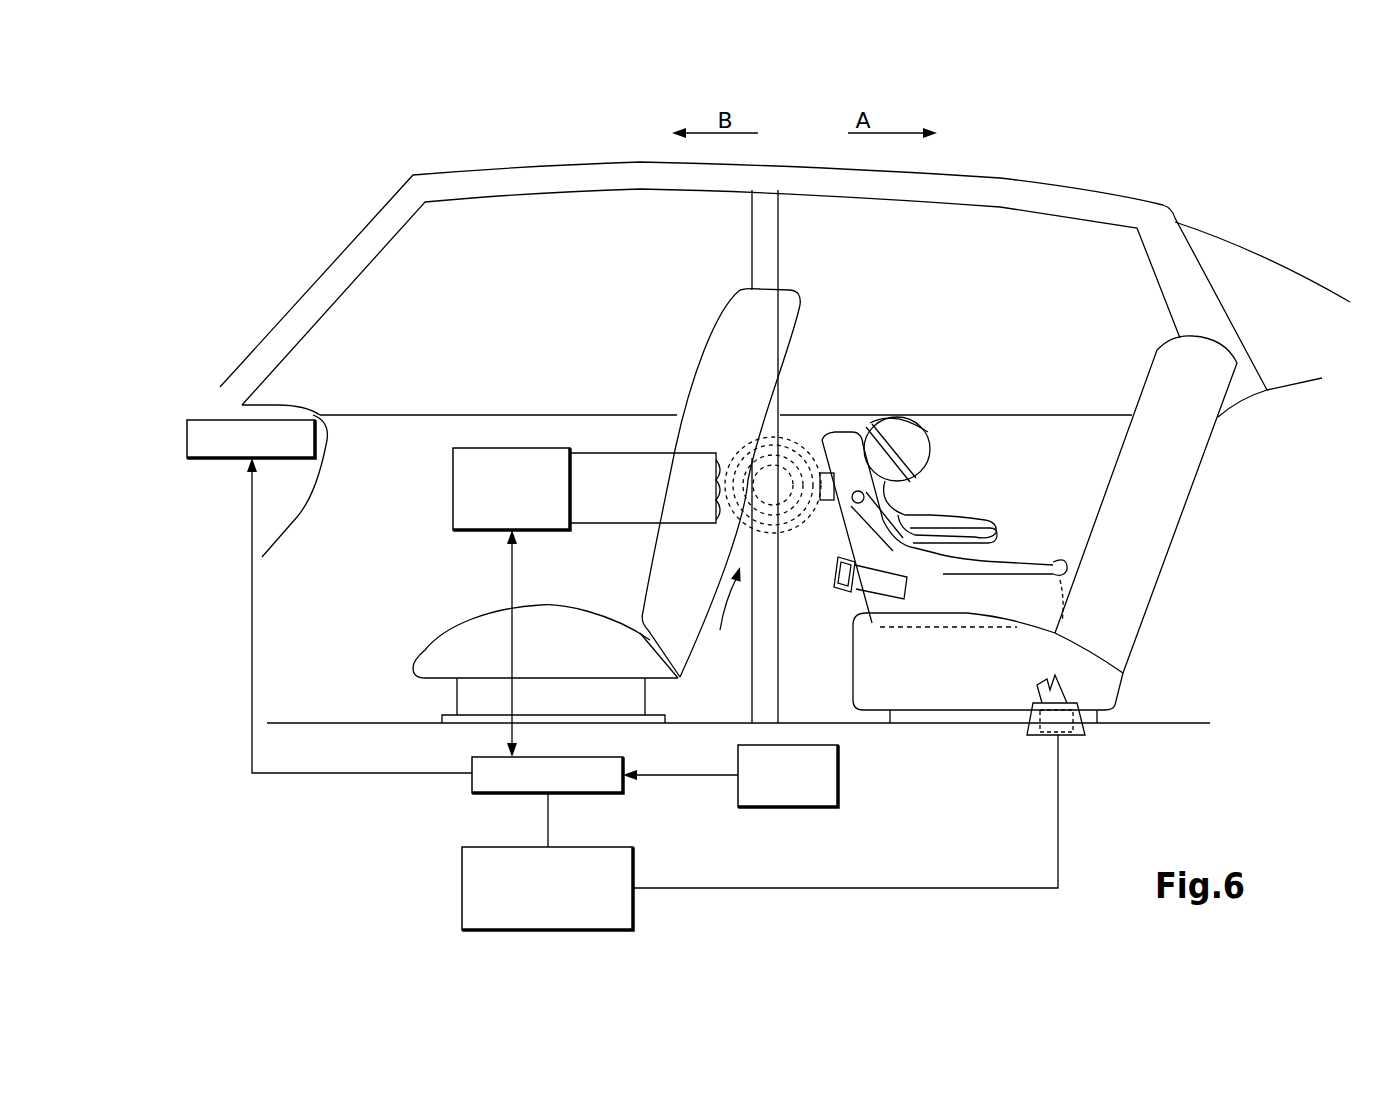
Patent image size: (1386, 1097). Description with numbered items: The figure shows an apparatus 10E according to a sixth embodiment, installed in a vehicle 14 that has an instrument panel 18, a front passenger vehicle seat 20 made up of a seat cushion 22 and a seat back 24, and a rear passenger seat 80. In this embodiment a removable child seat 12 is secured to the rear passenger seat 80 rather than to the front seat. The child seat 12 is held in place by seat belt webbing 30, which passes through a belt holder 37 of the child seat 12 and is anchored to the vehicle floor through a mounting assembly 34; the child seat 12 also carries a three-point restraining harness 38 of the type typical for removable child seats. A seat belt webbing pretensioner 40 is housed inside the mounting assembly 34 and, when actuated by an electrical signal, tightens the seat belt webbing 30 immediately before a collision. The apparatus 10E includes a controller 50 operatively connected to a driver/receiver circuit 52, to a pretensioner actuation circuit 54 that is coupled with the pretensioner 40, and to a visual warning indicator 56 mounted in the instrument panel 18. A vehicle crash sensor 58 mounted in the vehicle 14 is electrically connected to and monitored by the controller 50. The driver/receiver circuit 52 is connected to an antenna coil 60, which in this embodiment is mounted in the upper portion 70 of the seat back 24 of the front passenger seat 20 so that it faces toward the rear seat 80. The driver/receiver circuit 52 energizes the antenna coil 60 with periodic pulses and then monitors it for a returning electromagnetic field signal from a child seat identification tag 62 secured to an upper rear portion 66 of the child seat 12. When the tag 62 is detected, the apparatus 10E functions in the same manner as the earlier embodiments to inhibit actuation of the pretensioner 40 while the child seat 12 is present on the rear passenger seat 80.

The vehicle 14 is at (1052, 155).
The instrument panel 18 is at (275, 404).
The vehicle seat 20 is at (630, 487).
The seat cushion 22 is at (437, 647).
The seat back 24 is at (775, 312).
The upper portion of the seat back 70 is at (737, 382).
The child seat 12 is at (925, 508).
The upper rear portion of the child seat 66 is at (820, 438).
The three-point restraining harness 38 is at (902, 427).
The child seat identification tag 62 is at (822, 502).
The belt holder 37 is at (840, 578).
The seat belt webbing 30 is at (880, 578).
The apparatus 10E is at (728, 616).
The rear passenger seat 80 is at (1204, 493).
The mounting assembly 34 is at (1062, 741).
The seat belt webbing pretensioner 40 is at (1045, 730).
The controller 50 is at (473, 792).
The driver/receiver circuit 52 is at (497, 448).
The pretensioner actuation circuit 54 is at (640, 920).
The visual warning indicator 56 is at (191, 458).
The vehicle crash sensor 58 is at (830, 767).
The antenna coil 60 is at (716, 485).